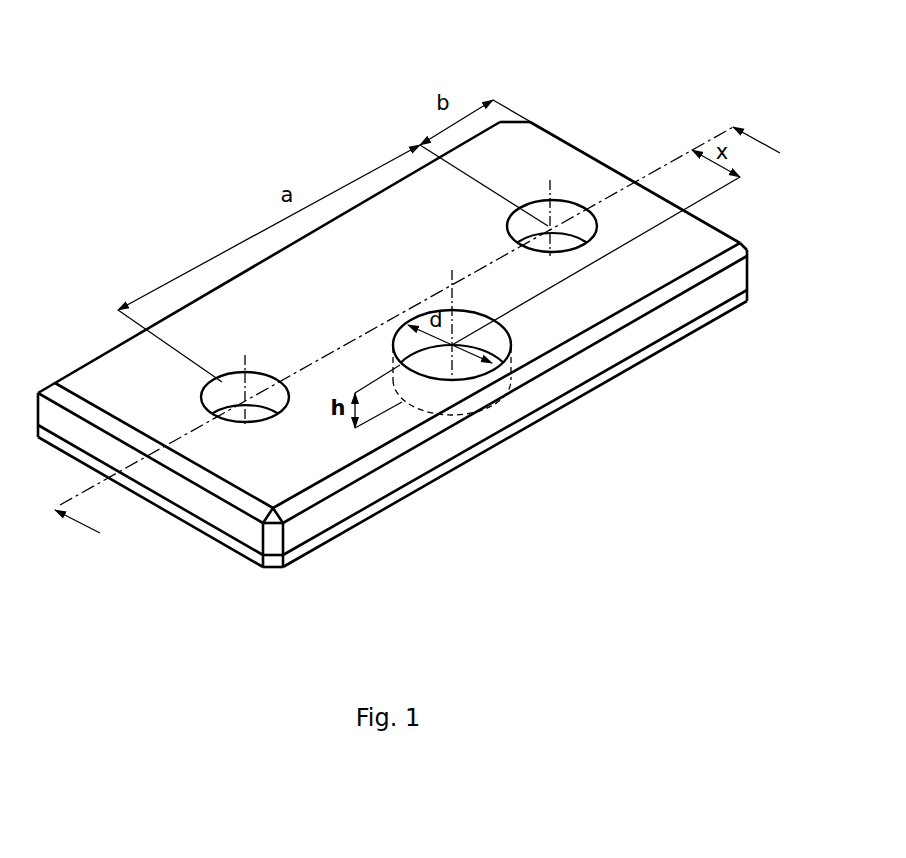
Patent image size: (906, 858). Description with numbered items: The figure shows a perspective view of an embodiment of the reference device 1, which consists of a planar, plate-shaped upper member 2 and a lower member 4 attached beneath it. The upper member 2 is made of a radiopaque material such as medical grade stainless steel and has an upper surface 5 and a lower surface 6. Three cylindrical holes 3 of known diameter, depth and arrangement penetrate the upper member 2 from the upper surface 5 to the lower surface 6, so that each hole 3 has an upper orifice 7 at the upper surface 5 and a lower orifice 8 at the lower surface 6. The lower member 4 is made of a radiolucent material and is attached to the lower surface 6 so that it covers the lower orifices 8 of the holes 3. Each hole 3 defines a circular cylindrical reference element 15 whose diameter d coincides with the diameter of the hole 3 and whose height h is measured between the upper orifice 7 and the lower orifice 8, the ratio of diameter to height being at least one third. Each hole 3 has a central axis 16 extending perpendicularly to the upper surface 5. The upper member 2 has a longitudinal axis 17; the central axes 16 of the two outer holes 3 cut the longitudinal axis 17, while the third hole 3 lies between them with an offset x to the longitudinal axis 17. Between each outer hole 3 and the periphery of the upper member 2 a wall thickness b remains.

The reference device 1 is at (206, 189).
The upper member 2 is at (733, 285).
The hole 3 is at (433, 363).
The lower member 4 is at (700, 320).
The upper surface 5 is at (127, 377).
The lower surface 6 is at (165, 493).
The upper orifice 7 is at (492, 362).
The lower orifice 8 is at (400, 362).
The reference element 15 is at (448, 415).
The central axis 16 is at (550, 183).
The longitudinal axis 17 is at (677, 153).